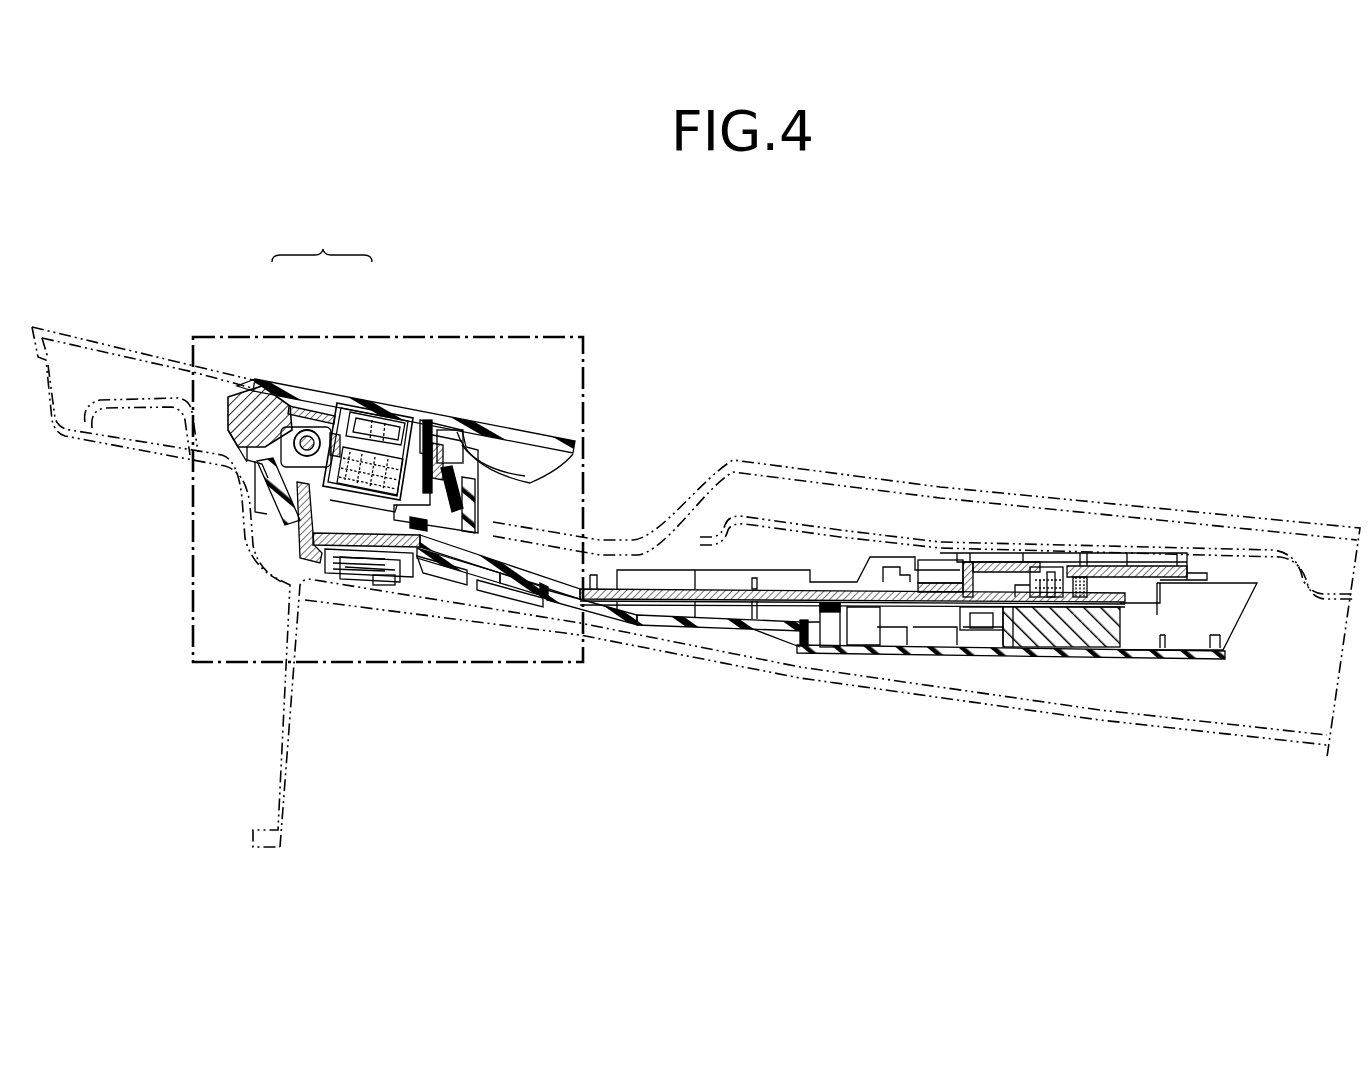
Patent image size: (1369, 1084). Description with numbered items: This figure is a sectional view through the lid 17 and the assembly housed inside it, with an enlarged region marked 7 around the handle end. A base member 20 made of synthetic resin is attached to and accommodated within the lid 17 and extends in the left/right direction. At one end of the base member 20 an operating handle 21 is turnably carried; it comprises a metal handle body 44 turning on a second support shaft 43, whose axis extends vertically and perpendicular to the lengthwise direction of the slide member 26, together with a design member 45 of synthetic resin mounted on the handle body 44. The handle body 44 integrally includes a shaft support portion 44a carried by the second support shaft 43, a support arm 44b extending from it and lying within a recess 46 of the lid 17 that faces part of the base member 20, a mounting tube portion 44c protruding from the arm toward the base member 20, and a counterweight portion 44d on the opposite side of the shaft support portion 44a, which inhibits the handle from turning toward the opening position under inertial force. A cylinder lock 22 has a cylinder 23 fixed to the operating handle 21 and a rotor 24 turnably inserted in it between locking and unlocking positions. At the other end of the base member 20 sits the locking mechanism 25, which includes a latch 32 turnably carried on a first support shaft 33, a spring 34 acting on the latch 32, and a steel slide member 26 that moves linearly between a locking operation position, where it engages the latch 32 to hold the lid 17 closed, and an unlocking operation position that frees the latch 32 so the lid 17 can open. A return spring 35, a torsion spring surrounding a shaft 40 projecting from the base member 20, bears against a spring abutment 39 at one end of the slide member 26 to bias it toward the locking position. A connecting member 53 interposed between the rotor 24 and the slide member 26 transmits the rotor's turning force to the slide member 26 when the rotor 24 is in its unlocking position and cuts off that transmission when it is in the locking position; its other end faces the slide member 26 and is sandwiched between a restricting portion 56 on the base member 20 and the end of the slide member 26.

The pedal unit enlarged region 7 is at (548, 322).
The lid 17 is at (843, 475).
The base member 20 is at (710, 627).
The operating handle 21 is at (322, 238).
The cylinder lock 22 is at (398, 393).
The cylinder 23 is at (400, 422).
The rotor 24 is at (345, 407).
The locking mechanism 25 is at (1000, 652).
The slide member 26 is at (730, 593).
The latch 32 is at (1057, 623).
The first support shaft 33 is at (1032, 585).
The spring 34 is at (1093, 572).
The return spring 35 is at (403, 590).
The spring abutment 39 is at (322, 572).
The shaft 40 is at (360, 582).
The second support shaft 43 is at (250, 442).
The handle body 44 is at (234, 386).
The shaft support portion 44a is at (312, 406).
The support arm 44b is at (458, 412).
The mounting tube portion 44c is at (440, 475).
The counterweight portion 44d is at (237, 426).
The design member 45 is at (312, 404).
The recess 46 is at (633, 540).
The connecting member 53 is at (300, 572).
The restricting portion 56 is at (300, 525).